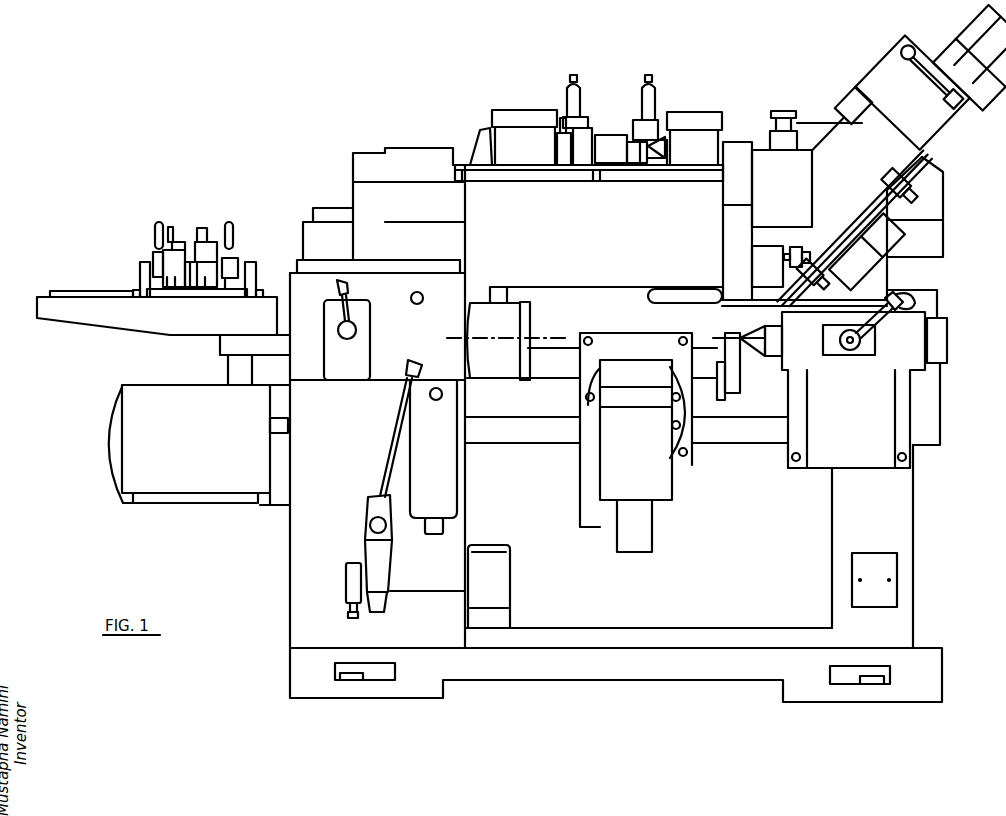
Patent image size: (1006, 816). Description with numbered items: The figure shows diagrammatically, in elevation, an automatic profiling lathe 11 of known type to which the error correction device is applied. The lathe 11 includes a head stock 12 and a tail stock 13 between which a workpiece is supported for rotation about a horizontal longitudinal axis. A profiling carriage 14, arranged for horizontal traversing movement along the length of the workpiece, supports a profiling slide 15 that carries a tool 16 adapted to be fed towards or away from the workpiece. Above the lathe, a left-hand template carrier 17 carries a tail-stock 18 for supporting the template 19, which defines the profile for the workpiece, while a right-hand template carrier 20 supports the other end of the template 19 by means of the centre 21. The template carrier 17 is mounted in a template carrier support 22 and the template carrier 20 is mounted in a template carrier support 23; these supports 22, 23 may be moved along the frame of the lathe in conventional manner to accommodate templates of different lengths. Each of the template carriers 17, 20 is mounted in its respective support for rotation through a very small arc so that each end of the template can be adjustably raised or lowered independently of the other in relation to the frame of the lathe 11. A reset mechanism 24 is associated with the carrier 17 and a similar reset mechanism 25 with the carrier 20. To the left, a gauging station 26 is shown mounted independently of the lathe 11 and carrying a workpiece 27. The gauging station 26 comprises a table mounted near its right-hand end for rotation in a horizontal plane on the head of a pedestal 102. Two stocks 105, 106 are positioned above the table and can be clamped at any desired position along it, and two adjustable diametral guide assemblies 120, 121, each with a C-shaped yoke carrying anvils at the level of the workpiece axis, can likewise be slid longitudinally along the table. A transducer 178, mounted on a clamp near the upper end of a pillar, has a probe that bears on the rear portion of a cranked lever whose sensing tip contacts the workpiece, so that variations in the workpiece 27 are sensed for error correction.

The automatic profiling lathe 11 is at (280, 524).
The head stock 12 is at (502, 310).
The tail stock 13 is at (913, 350).
The profiling carriage 14 is at (865, 72).
The profiling slide 15 is at (925, 162).
The tool 16 is at (782, 303).
The left-hand template carrier 17 is at (514, 120).
The tail-stock 18 is at (560, 128).
The template 19 is at (615, 133).
The right-hand template carrier 20 is at (727, 140).
The centre 21 is at (657, 138).
The template carrier support 22 is at (473, 147).
The template carrier support 23 is at (657, 164).
The reset mechanism 24 is at (585, 117).
The reset mechanism 25 is at (657, 113).
The gauging station 26 is at (85, 294).
The workpiece 27 is at (190, 297).
The pedestal 102 is at (237, 370).
The stock 105 is at (140, 291).
The stock 106 is at (253, 292).
The adjustable diametral guide assembly 120 is at (176, 238).
The adjustable diametral guide assembly 121 is at (206, 236).
The transducer 178 is at (157, 232).